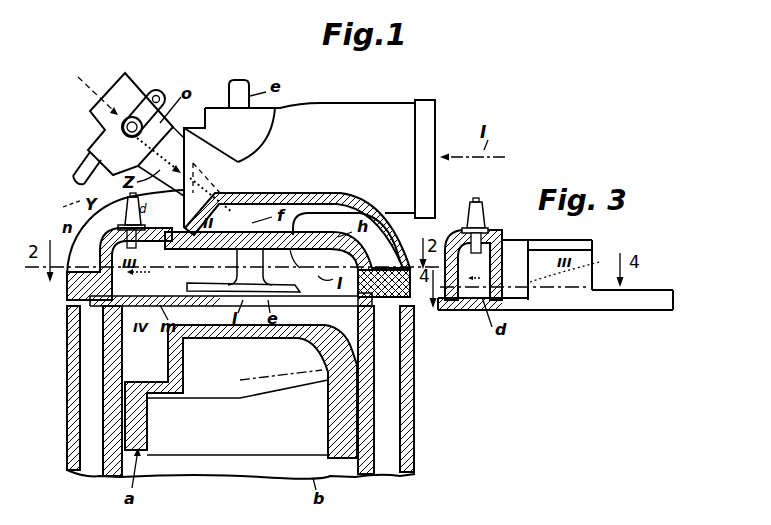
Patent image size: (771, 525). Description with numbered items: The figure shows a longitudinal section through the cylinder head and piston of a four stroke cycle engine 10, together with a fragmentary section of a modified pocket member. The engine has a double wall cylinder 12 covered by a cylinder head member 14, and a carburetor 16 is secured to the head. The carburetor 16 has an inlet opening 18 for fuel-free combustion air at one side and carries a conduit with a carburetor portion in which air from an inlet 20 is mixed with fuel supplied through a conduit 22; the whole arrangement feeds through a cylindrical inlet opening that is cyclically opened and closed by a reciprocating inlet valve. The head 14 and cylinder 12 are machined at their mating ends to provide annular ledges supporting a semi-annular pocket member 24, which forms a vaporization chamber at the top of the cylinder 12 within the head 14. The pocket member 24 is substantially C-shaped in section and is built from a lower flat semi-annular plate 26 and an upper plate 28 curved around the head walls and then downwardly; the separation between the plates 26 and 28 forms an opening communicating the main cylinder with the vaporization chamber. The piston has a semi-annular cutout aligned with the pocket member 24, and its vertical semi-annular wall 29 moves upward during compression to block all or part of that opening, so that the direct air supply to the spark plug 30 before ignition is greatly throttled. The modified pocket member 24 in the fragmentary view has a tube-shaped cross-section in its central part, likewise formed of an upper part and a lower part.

In FIG. 1, the four stroke cycle engine 10 is at (422, 436).
In FIG. 1, the double wall cylinder 12 is at (68, 450).
In FIG. 1, the cylinder head member 14 is at (66, 294).
In FIG. 1, the carburetor 16 is at (333, 103).
In FIG. 1, the inlet opening 18 is at (430, 115).
In FIG. 1, the inlet 20 is at (85, 118).
In FIG. 1, the conduit 22 is at (85, 170).
In FIG. 3, the semi-annular pocket member 24 is at (541, 314).
In FIG. 1, the lower flat semi-annular plate 26 is at (150, 333).
In FIG. 1, the upper plate 28 is at (150, 232).
In FIG. 1, the vertical semi-annular wall 29 is at (183, 360).
In FIG. 1, the spark plug 30 is at (124, 206).
In FIG. 3, the spark plug 30 is at (484, 218).